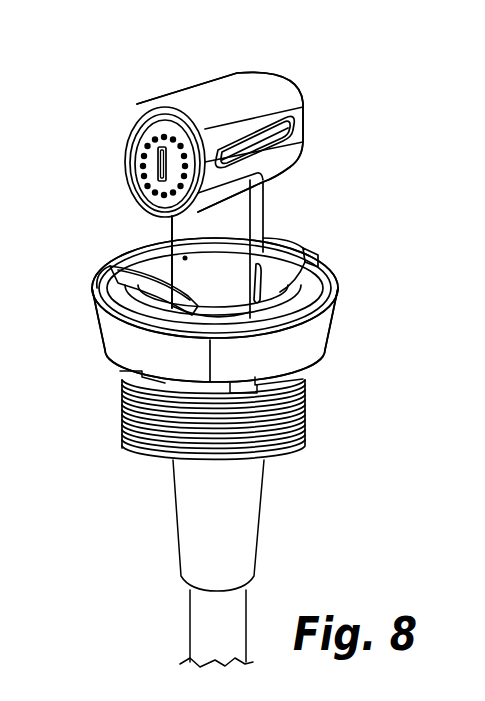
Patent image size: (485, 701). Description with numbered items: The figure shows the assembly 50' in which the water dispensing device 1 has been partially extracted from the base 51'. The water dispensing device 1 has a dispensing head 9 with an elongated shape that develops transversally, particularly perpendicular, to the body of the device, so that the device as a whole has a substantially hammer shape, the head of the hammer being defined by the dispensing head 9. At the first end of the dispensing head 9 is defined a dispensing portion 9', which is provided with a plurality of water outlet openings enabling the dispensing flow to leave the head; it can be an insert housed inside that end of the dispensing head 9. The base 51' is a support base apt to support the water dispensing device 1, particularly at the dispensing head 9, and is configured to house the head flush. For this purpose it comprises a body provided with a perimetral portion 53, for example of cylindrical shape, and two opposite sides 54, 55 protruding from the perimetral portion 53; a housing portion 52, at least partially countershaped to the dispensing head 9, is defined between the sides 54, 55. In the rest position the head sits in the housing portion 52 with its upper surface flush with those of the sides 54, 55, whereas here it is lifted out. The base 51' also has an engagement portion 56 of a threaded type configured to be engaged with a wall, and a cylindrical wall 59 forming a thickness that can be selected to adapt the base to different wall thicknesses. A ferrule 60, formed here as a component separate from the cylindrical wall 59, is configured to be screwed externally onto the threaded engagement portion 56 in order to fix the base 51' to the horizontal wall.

The water dispensing device 1 is at (170, 78).
The dispensing head 9 is at (220, 110).
The dispensing portion 9' is at (139, 166).
The assembly 50' is at (245, 334).
The base 51' is at (259, 310).
The housing portion 52 is at (283, 265).
The perimetral portion 53 is at (286, 306).
The side 54 is at (291, 232).
The side 55 is at (133, 289).
The engagement portion 56 is at (277, 413).
The cylindrical wall 59 is at (290, 352).
The ferrule 60 is at (165, 385).